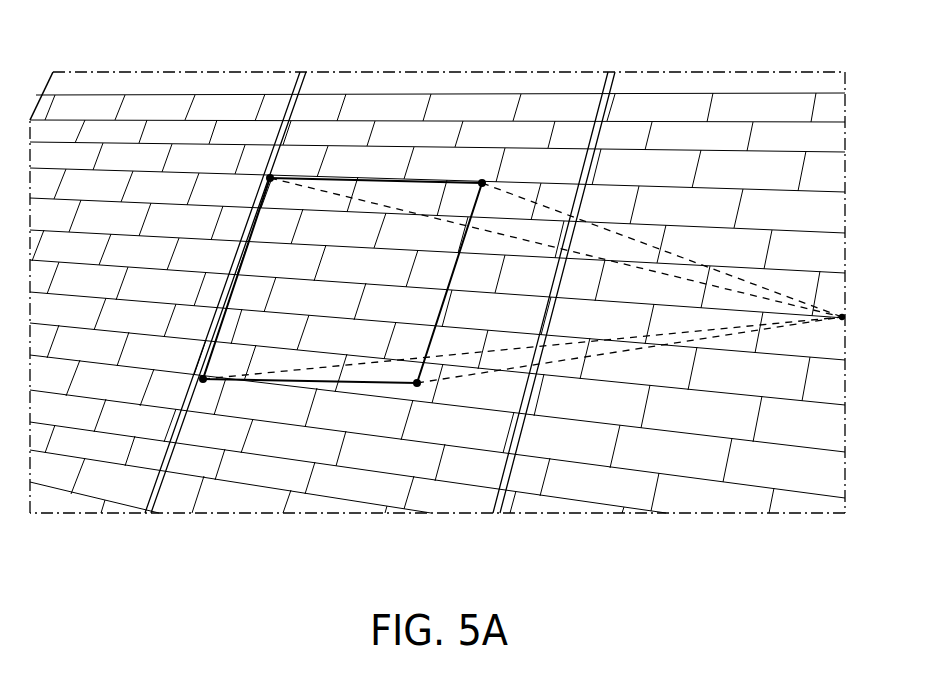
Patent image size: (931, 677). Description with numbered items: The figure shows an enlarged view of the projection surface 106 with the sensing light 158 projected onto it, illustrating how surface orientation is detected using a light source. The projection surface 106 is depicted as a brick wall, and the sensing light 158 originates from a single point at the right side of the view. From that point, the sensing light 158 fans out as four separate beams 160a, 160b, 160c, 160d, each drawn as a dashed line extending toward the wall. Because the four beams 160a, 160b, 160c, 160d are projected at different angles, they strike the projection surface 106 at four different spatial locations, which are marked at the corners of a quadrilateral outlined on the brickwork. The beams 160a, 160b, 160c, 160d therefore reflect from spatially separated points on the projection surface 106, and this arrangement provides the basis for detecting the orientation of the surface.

The projection surface 106 is at (670, 243).
The sensing light 158 is at (840, 320).
The beam 160a is at (358, 192).
The beam 160b is at (556, 203).
The beam 160c is at (569, 364).
The beam 160d is at (372, 364).